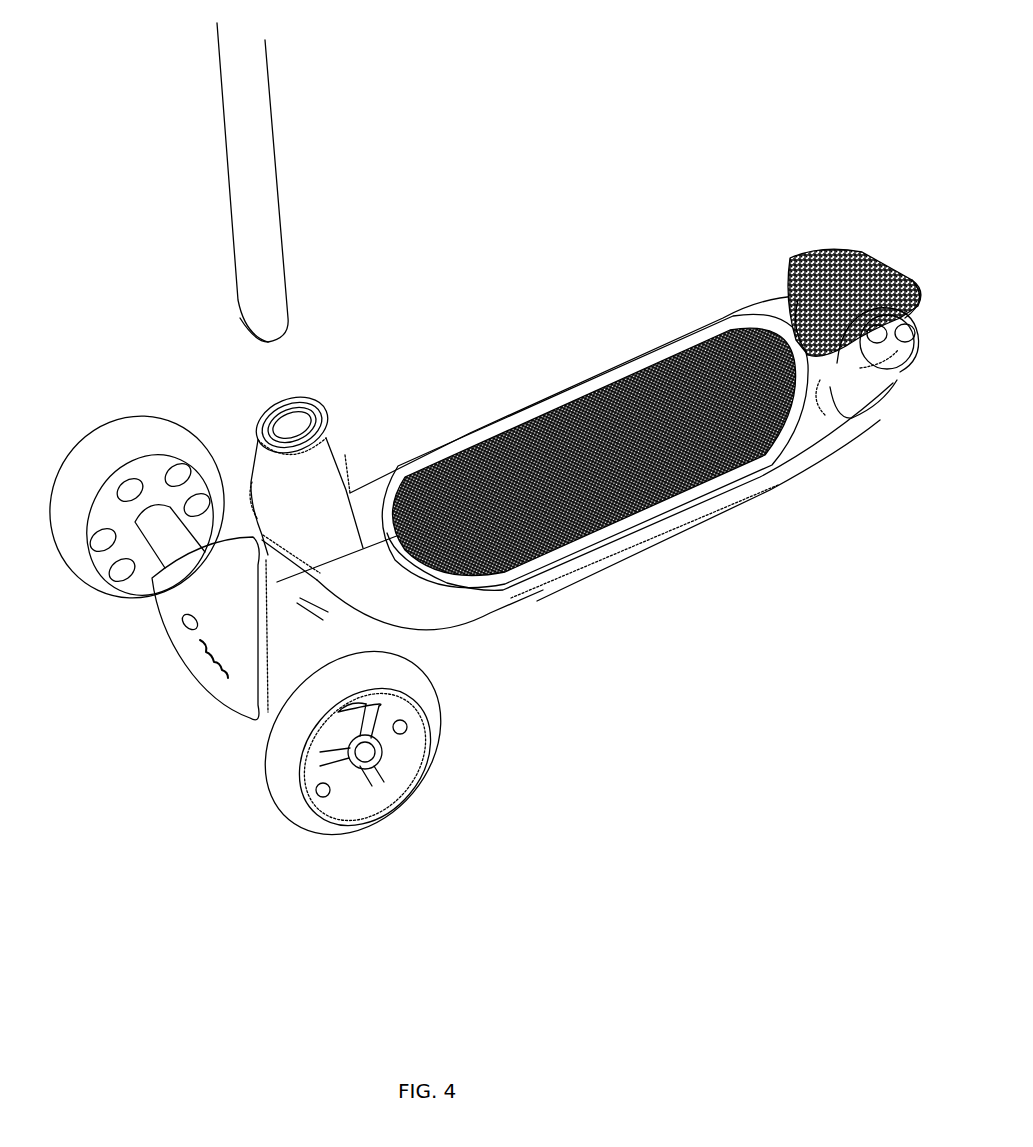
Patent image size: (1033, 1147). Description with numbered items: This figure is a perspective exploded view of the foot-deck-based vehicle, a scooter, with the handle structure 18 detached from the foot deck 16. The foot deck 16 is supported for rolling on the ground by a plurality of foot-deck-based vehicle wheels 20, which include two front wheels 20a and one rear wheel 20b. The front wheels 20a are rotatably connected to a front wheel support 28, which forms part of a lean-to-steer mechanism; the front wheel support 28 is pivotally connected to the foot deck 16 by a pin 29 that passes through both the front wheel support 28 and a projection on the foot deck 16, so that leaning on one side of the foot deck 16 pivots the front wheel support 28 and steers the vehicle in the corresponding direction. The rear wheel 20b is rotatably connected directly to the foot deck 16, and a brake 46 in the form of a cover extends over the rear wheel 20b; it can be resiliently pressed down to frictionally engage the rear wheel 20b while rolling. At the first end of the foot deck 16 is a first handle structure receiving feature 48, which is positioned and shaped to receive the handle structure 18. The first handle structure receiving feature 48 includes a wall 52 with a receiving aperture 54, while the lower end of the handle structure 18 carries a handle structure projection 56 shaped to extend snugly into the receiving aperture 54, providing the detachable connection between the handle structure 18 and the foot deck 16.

The foot deck 16 is at (490, 598).
The handle structure 18 is at (236, 130).
The foot-deck-based vehicle wheels 20 is at (487, 601).
The front wheel 20a is at (76, 555).
The rear wheel 20b is at (905, 355).
The front wheel support 28 is at (228, 640).
The pin 29 is at (603, 533).
The brake 46 is at (853, 350).
The first handle structure receiving feature 48 is at (342, 394).
The wall 52 is at (318, 438).
The receiving aperture 54 is at (294, 416).
The handle structure projection 56 is at (250, 318).